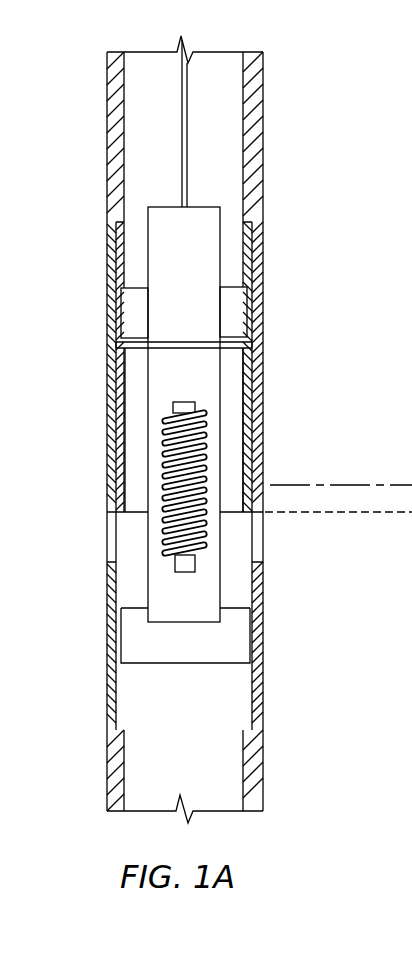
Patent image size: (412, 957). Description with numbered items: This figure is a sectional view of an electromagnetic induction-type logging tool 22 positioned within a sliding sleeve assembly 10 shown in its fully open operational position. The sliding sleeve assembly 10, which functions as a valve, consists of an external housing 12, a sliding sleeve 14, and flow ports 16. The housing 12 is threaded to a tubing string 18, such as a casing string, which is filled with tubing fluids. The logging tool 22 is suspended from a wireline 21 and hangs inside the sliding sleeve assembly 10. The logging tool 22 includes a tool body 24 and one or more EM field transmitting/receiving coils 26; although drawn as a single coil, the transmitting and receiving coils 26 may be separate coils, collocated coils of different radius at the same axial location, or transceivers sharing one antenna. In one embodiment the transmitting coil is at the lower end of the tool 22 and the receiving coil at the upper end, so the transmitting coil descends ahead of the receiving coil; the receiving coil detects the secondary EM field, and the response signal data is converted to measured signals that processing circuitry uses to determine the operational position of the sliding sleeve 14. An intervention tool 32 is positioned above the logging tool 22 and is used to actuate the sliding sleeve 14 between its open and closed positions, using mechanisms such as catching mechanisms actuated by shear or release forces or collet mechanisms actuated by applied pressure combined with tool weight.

The sliding sleeve assembly 10 is at (93, 397).
The external housing 12 is at (113, 270).
The sliding sleeve 14 is at (247, 396).
The flow ports 16 is at (110, 535).
The tubing string 18 is at (115, 100).
The wireline 21 is at (190, 100).
The EM induction-type logging tool 22 is at (137, 340).
The tool body 24 is at (158, 442).
The EM field transmitting/receiving coils 26 is at (167, 557).
The intervention tool 32 is at (222, 312).